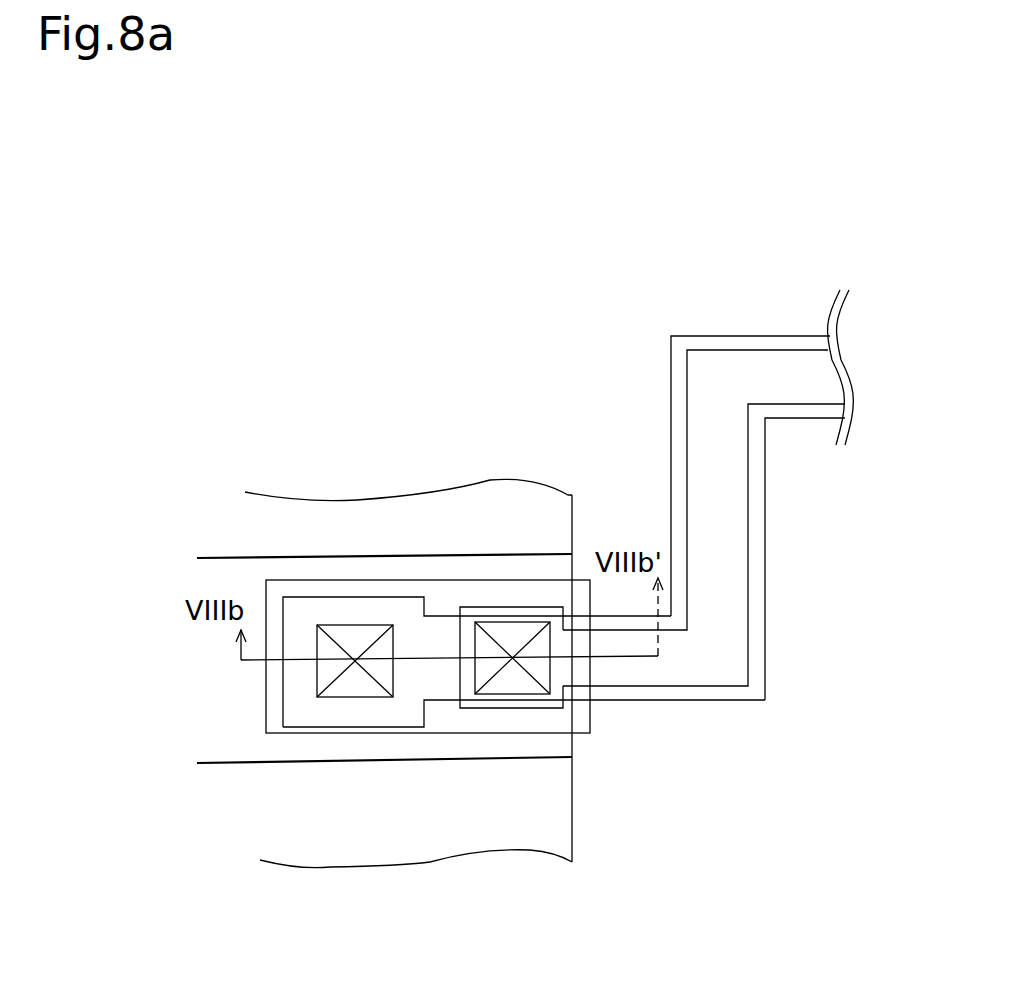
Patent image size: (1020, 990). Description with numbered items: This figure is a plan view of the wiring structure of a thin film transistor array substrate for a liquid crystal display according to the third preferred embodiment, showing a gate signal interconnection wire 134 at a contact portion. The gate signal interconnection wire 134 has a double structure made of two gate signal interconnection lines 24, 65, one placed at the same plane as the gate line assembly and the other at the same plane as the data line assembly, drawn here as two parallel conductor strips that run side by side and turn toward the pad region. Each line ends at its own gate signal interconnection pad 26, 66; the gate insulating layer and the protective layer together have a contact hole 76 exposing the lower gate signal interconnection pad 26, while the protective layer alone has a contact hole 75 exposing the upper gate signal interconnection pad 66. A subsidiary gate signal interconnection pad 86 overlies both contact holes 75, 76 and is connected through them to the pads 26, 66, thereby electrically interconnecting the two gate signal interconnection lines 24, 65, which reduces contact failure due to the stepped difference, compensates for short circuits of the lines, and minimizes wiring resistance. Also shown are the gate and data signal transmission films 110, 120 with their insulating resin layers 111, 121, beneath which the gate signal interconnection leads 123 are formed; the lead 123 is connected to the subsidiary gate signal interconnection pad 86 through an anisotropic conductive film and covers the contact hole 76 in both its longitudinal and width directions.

The gate signal interconnection lead 123 is at (352, 557).
The contact hole 76 is at (343, 620).
The gate signal interconnection pad 26 is at (284, 697).
The contact hole 75 is at (527, 710).
The gate signal interconnection pad 66 is at (497, 708).
The subsidiary gate signal interconnection pad 86 is at (586, 736).
The gate signal interconnection line 65 is at (750, 589).
The gate signal interconnection line 24 is at (766, 650).
The gate signal interconnection wire 134 is at (837, 417).
The gate signal transmission film 110 is at (408, 902).
The data signal transmission film 120 is at (408, 902).
The insulating resin layer 111 is at (409, 705).
The insulating resin layer 121 is at (528, 853).